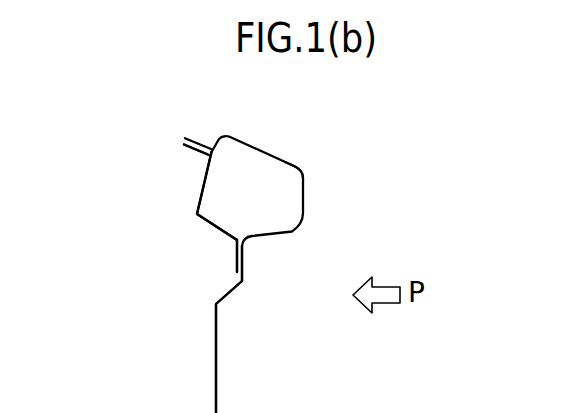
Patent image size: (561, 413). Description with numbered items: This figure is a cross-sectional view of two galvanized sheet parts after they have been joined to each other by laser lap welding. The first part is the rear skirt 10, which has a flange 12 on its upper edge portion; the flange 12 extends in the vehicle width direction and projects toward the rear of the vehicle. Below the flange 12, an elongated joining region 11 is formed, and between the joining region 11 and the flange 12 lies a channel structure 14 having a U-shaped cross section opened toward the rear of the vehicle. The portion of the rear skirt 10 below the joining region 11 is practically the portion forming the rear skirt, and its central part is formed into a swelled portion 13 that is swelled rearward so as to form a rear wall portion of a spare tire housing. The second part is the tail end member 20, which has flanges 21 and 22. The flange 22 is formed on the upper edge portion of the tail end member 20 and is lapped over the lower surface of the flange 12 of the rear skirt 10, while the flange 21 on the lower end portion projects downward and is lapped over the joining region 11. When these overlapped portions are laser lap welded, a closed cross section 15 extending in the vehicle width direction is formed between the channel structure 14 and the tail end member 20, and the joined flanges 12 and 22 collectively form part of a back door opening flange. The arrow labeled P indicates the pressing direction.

The rear skirt 10 is at (309, 190).
The joining region 11 is at (245, 252).
The flange 12 is at (198, 138).
The swelled portion 13 is at (210, 398).
The channel structure 14 is at (297, 167).
The closed cross section 15 is at (265, 205).
The tail end member 20 is at (197, 217).
The flange 21 is at (235, 252).
The flange 22 is at (190, 150).